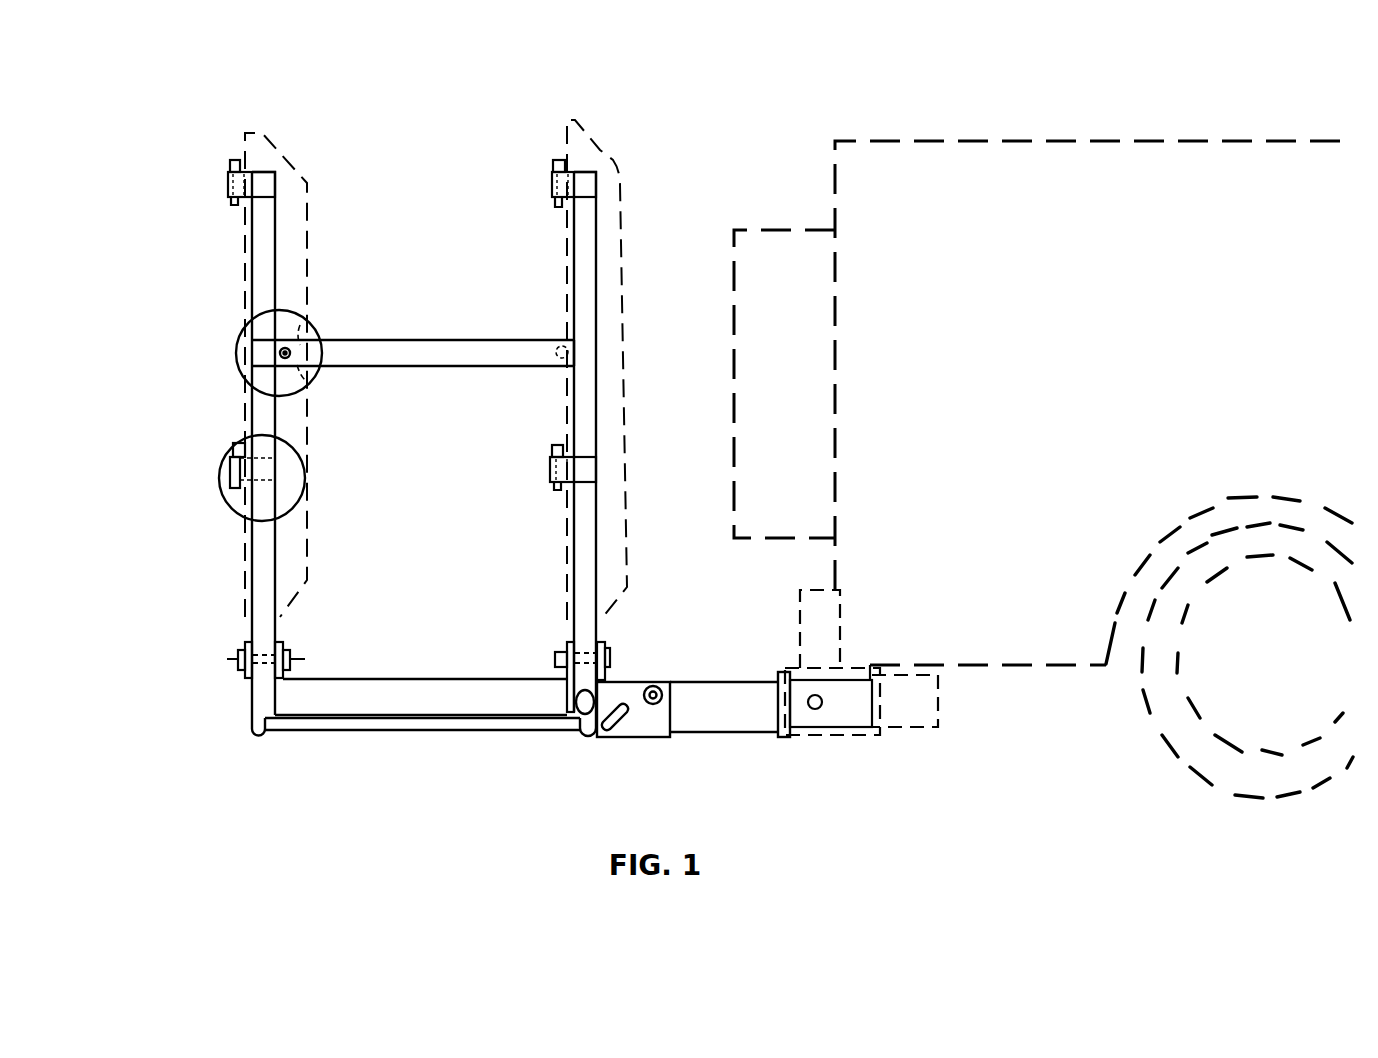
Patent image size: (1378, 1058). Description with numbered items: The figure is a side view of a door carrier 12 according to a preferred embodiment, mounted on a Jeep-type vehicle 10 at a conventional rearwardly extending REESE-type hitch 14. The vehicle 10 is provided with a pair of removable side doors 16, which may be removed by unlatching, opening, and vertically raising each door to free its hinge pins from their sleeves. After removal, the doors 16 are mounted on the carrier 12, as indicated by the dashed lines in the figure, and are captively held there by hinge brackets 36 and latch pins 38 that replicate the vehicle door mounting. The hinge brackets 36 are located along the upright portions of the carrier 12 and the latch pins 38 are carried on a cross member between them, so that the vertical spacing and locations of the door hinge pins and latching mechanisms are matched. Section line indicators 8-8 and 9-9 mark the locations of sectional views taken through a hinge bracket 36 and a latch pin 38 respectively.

The vehicle 10 is at (932, 155).
The door carrier 12 is at (371, 758).
The hitch 14 is at (822, 733).
The side doors 16 is at (305, 175).
The hinge brackets 36 is at (223, 182).
The latch pins 38 is at (557, 347).
The section line 8-8 is at (223, 474).
The section line 9-9 is at (240, 326).